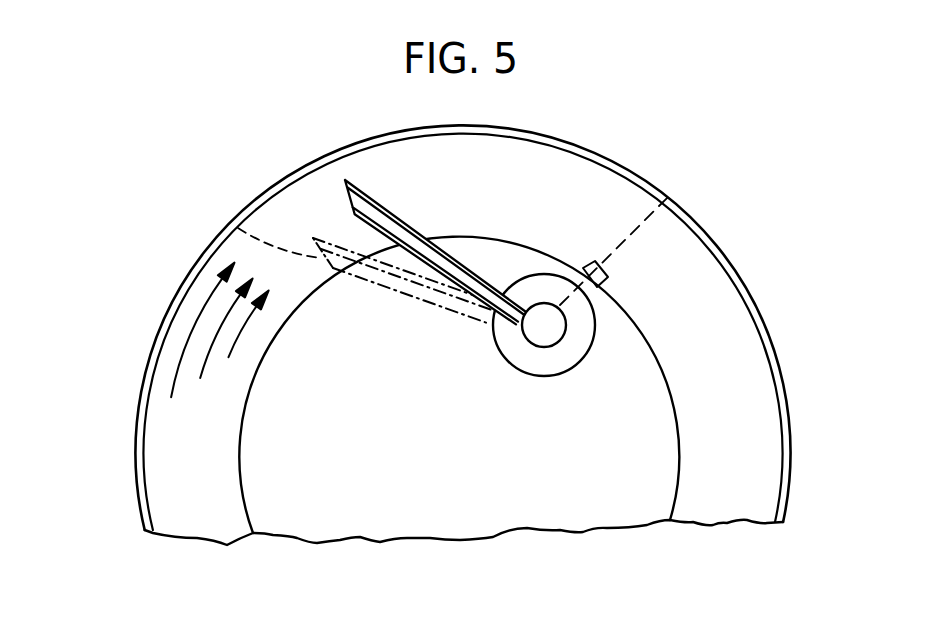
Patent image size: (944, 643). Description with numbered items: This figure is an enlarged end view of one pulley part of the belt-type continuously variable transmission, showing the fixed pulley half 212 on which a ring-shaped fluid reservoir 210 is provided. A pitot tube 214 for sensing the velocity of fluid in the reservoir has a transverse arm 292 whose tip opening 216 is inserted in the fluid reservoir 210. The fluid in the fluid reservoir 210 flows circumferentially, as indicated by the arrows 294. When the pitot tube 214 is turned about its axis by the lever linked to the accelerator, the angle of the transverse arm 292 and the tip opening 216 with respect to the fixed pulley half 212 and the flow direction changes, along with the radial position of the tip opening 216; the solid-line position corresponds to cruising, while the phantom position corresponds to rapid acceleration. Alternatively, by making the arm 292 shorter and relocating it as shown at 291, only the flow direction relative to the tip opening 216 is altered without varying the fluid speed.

The fluid reservoir 210 is at (730, 261).
The fixed pulley half 212 is at (490, 487).
The pitot tube 214 is at (496, 262).
The tip opening 216 is at (343, 189).
The alternative arm location 291 is at (672, 197).
The transverse arm 292 is at (457, 278).
The arrows 294 is at (171, 397).